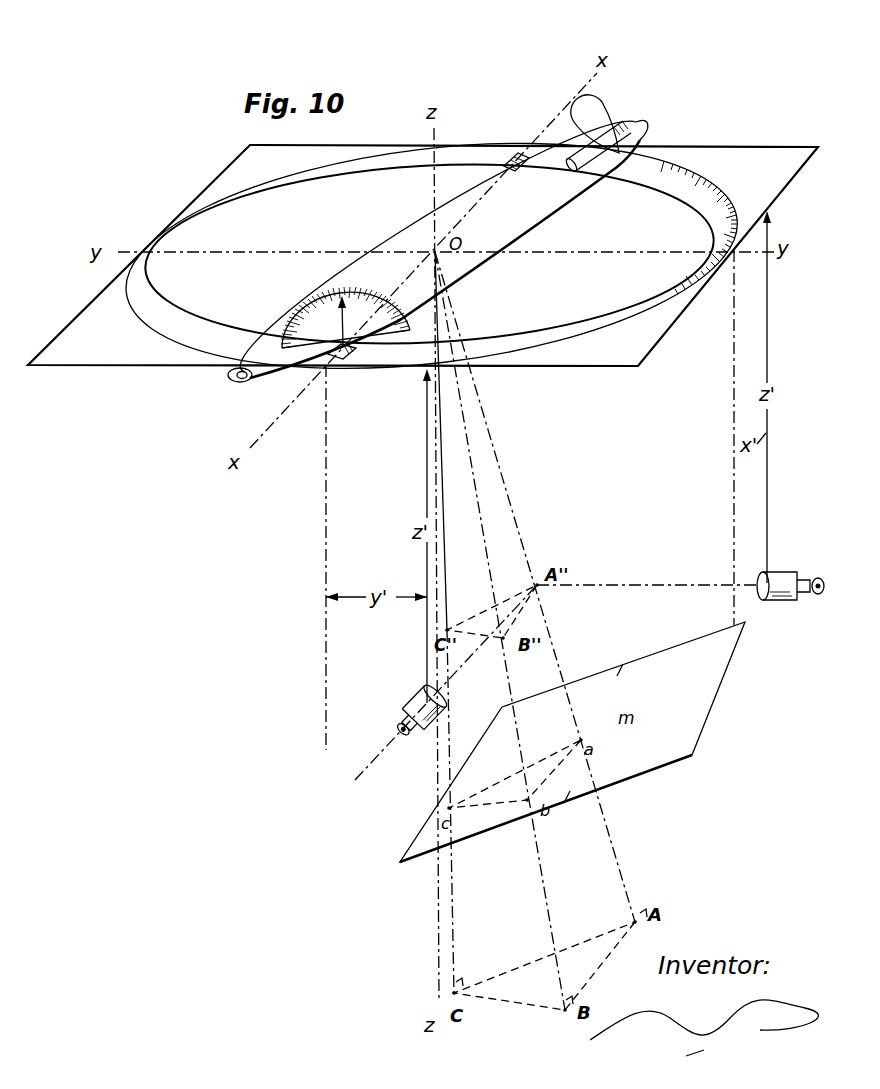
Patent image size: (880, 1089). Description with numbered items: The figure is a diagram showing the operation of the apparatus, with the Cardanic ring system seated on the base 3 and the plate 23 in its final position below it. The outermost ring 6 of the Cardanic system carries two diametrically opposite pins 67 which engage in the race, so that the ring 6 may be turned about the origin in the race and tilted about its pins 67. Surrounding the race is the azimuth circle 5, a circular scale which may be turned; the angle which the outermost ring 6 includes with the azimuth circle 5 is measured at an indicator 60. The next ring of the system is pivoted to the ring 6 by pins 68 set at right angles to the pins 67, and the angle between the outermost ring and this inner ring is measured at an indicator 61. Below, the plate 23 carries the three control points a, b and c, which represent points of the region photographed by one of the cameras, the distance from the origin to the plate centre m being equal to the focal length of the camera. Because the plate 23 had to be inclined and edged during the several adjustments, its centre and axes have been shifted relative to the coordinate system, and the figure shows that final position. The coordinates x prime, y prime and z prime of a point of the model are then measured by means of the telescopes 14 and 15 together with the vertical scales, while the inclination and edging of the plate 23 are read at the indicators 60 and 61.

The base plate (table) 3 is at (636, 352).
The azimuth circle 5 is at (690, 179).
The outermost ring 6 is at (590, 198).
The telescope or sighting device 14 is at (410, 703).
The sighting device 15 is at (778, 574).
The plate 23 is at (712, 718).
The indicator 60 is at (311, 297).
The indicator 61 is at (603, 112).
The pins 67 is at (513, 152).
The pins 68 is at (645, 126).